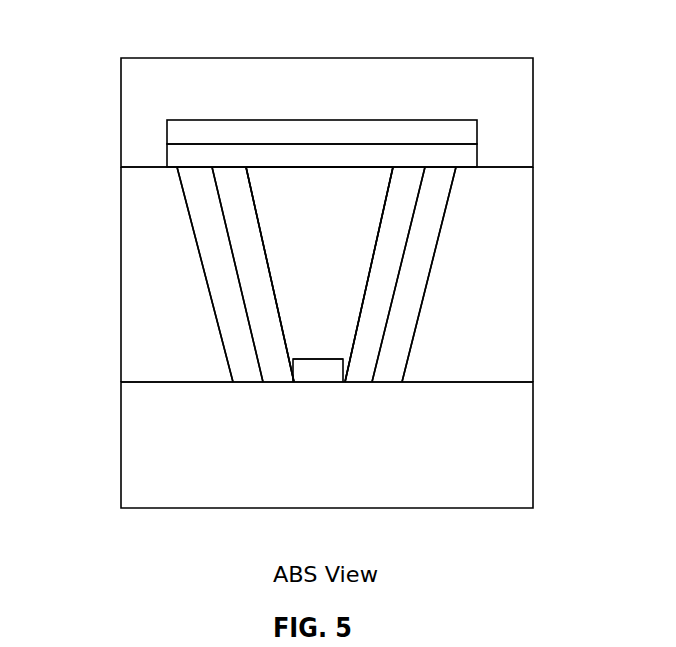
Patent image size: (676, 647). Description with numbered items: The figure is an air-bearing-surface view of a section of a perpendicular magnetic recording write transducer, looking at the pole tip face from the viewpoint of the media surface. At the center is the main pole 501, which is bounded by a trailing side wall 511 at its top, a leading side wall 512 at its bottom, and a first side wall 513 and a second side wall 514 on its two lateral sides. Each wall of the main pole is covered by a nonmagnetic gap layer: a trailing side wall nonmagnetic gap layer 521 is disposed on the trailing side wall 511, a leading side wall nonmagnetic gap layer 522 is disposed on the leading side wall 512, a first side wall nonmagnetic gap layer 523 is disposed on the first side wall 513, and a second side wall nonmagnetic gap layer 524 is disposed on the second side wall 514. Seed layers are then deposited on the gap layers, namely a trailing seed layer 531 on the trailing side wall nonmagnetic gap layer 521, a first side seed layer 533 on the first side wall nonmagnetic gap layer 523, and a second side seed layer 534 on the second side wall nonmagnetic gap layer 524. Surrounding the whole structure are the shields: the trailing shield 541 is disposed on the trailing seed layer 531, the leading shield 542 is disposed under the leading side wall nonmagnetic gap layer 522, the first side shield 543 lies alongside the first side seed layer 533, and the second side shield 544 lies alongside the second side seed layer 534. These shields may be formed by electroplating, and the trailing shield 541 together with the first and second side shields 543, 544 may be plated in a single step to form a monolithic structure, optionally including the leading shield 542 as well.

The main pole 501 is at (318, 287).
The trailing side wall 511 is at (297, 173).
The leading side wall 512 is at (322, 358).
The first side wall 513 is at (373, 191).
The second side wall 514 is at (272, 256).
The trailing side wall nonmagnetic gap layer 521 is at (478, 157).
The leading side wall nonmagnetic gap layer 522 is at (323, 370).
The first side wall nonmagnetic gap layer 523 is at (392, 238).
The second side wall nonmagnetic gap layer 524 is at (247, 233).
The trailing seed layer 531 is at (478, 133).
The first side seed layer 533 is at (415, 273).
The second side seed layer 534 is at (220, 270).
The trailing shield 541 is at (203, 87).
The leading shield 542 is at (362, 493).
The first side shield 543 is at (500, 353).
The second side shield 544 is at (172, 330).